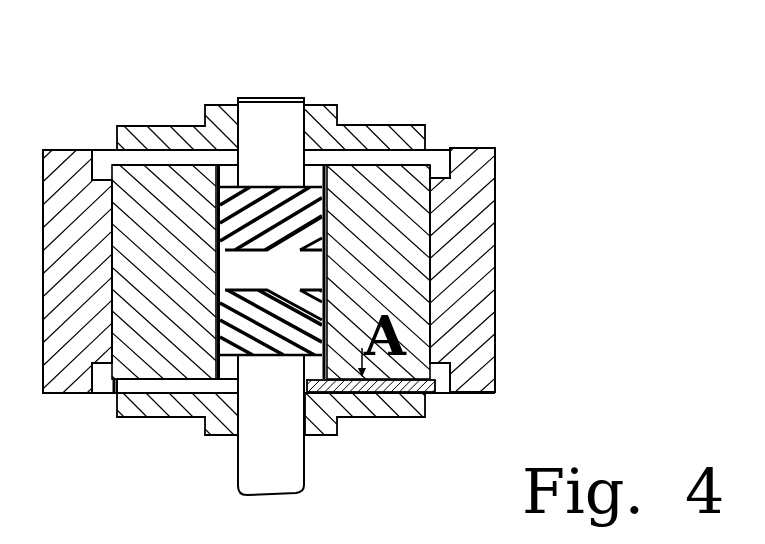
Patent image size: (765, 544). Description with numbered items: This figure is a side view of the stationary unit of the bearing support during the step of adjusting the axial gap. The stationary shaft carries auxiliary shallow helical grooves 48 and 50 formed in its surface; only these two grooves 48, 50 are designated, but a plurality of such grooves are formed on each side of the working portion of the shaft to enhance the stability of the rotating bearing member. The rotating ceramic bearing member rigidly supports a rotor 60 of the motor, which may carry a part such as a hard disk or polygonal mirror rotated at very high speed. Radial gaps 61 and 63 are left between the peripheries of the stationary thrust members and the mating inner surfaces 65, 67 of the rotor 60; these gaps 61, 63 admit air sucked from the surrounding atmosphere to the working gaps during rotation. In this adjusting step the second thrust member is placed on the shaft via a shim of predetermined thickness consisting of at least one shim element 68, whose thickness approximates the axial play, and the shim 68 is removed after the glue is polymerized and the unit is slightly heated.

The auxiliary shallow helical groove 48 is at (252, 247).
The auxiliary shallow helical groove 50 is at (284, 313).
The rotor 60 is at (482, 275).
The radial gap 61 is at (440, 162).
The radial gap 63 is at (441, 393).
The inner surface of rotor 65 is at (450, 178).
The inner surface of rotor 67 is at (445, 367).
The shim element 68 is at (367, 461).